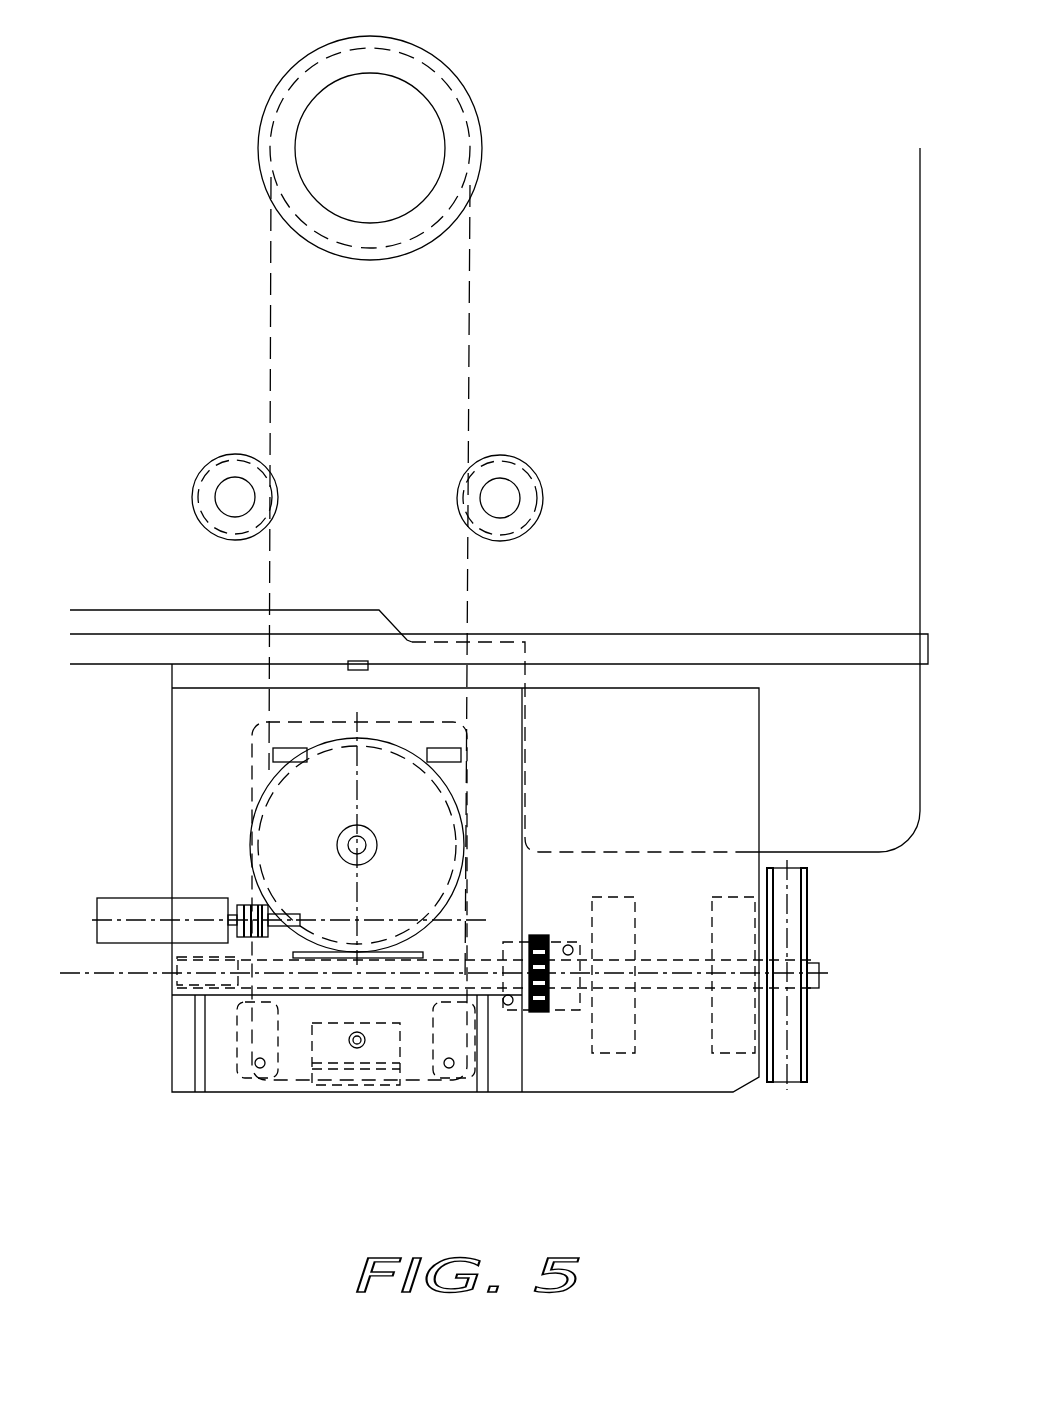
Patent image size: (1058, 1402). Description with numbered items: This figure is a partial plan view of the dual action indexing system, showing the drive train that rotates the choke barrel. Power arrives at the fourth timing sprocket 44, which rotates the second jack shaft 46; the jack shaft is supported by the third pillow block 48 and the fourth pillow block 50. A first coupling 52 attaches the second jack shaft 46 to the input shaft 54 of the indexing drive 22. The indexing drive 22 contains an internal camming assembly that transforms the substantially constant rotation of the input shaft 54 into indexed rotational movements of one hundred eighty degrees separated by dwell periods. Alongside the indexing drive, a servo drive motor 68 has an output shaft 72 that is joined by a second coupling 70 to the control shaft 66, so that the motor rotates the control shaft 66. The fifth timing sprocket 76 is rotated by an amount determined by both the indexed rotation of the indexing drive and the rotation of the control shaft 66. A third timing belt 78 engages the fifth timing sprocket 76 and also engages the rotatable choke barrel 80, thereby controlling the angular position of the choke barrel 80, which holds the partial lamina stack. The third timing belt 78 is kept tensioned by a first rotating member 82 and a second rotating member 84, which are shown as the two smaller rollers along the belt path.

The indexing drive 22 is at (293, 1073).
The fourth timing sprocket 44 is at (807, 1037).
The second jack shaft 46 is at (667, 987).
The third pillow block 48 is at (730, 1053).
The fourth pillow block 50 is at (612, 1053).
The first coupling 52 is at (550, 1017).
The input shaft 54 is at (487, 967).
The control shaft 66 is at (297, 925).
The servo drive motor 68 is at (108, 900).
The second coupling 70 is at (267, 940).
The output shaft 72 is at (233, 912).
The fifth timing sprocket 76 is at (473, 863).
The third timing belt 78 is at (468, 351).
The rotatable choke barrel 80 is at (463, 138).
The first rotating member 82 is at (218, 467).
The second rotating member 84 is at (527, 480).